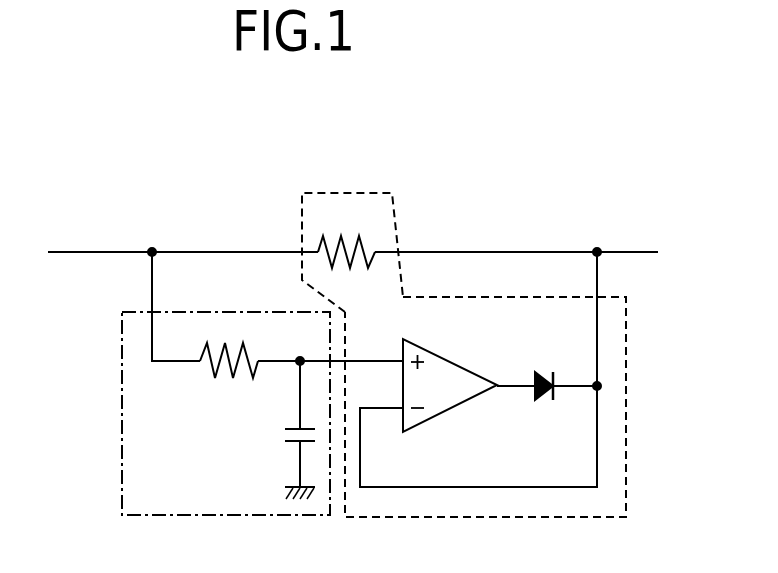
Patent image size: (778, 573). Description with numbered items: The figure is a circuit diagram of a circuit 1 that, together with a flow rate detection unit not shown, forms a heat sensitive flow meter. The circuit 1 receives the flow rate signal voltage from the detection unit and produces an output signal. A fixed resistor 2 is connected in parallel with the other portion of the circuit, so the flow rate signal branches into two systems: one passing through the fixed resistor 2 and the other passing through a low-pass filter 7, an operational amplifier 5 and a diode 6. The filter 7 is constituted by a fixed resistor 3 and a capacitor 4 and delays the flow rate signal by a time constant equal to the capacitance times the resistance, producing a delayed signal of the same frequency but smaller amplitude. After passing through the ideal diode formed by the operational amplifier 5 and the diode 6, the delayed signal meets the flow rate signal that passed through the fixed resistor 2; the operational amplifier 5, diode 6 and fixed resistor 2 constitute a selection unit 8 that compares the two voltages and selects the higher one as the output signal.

The circuit 1 is at (321, 135).
The fixed resistor 2 is at (372, 240).
The fixed resistor 3 is at (226, 384).
The capacitor 4 is at (283, 437).
The operational amplifier 5 is at (462, 409).
The diode 6 is at (545, 398).
The low-pass filter 7 is at (122, 414).
The selection unit 8 is at (627, 400).